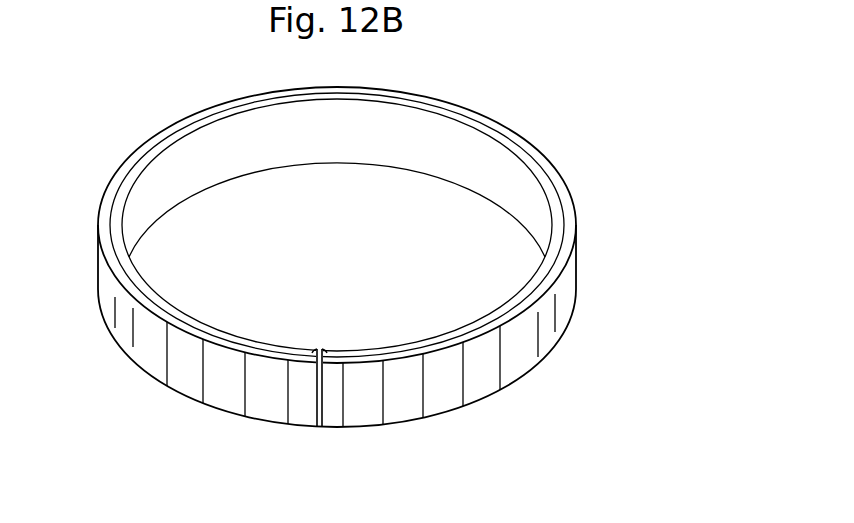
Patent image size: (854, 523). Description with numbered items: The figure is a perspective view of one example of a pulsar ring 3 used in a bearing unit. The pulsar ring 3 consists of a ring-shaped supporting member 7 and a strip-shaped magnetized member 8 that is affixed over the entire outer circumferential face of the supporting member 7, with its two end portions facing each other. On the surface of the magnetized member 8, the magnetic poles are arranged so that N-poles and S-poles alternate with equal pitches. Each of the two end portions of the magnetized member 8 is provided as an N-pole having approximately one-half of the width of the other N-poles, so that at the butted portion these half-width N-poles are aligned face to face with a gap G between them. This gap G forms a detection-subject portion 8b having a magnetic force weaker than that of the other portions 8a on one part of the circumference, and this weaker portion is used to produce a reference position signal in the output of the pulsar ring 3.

The pulsar ring 3 is at (581, 226).
The supporting member 7 is at (468, 157).
The magnetized member 8 is at (573, 292).
The other portions 8a is at (273, 422).
The detection-subject portion 8b is at (333, 430).
The gap G is at (313, 422).